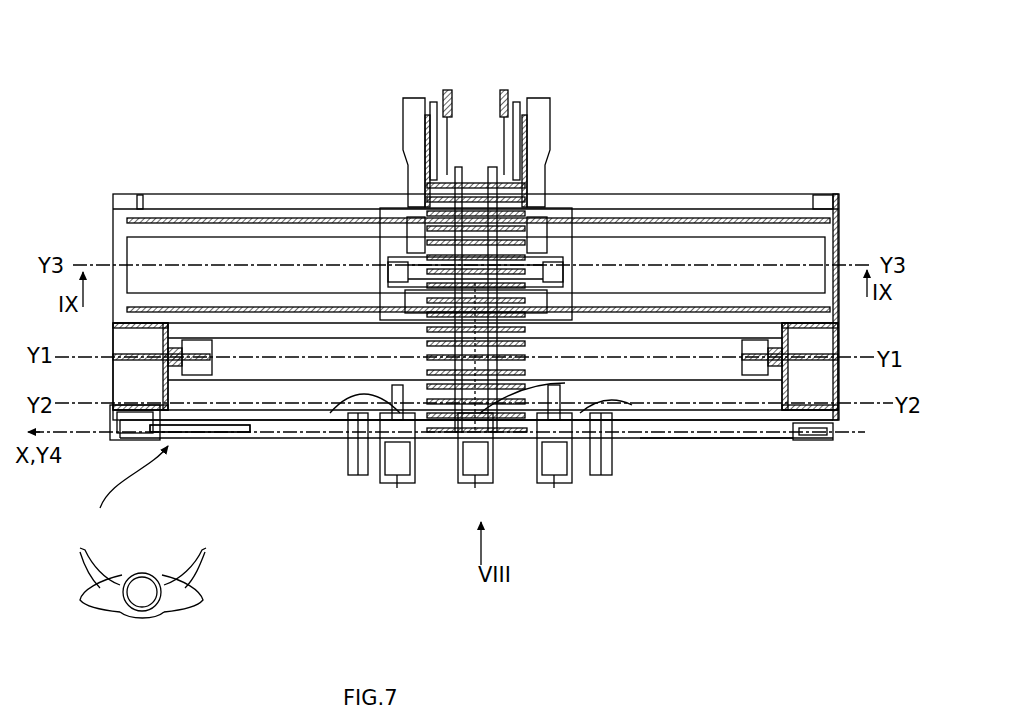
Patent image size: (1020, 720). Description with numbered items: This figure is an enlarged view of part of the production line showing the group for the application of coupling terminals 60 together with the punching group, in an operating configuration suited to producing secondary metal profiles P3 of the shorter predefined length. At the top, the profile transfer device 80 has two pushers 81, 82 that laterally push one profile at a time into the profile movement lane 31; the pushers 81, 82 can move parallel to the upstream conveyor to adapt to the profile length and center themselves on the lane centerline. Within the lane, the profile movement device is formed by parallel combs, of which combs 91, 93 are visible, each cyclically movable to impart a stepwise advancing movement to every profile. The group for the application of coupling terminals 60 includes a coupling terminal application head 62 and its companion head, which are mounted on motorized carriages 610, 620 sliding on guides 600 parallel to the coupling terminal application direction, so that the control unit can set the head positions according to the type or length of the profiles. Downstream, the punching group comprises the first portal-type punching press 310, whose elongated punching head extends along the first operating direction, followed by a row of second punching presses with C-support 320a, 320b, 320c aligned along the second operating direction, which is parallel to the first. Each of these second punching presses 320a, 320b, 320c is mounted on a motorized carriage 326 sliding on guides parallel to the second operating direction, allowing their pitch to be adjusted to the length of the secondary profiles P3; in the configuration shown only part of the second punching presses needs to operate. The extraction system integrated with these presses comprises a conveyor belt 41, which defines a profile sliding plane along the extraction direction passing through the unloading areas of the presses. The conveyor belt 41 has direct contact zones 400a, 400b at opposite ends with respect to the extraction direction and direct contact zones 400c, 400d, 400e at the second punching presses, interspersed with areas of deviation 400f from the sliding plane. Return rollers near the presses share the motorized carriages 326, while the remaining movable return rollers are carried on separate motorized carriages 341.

The profile movement lane 31 is at (475, 110).
The conveyor belt 41 is at (760, 442).
The group for the application of coupling terminals 60 is at (579, 247).
The coupling terminal application head 62 is at (573, 278).
The profile transfer device 80 is at (499, 107).
The pusher 81 is at (409, 91).
The pusher 82 is at (529, 91).
The comb 91 is at (460, 156).
The comb 93 is at (490, 156).
The first portal-type punching press 310 is at (707, 342).
The second punching press with C-support 320a is at (408, 492).
The second punching press with C-support 320b is at (487, 484).
The second punching press with C-support 320c is at (578, 464).
The motorized carriage 326 is at (383, 490).
The motorized carriage 341 is at (350, 478).
The direct contact zone 400a is at (120, 490).
The direct contact zone 400b is at (792, 445).
The direct contact zone 400c is at (330, 413).
The direct contact zone 400d is at (730, 432).
The direct contact zone 400e is at (680, 440).
The area of deviation 400f is at (370, 478).
The guide 600 is at (797, 208).
The motorized carriage 610 is at (393, 230).
The motorized carriage 620 is at (553, 203).
The secondary metal profile P3 is at (197, 440).